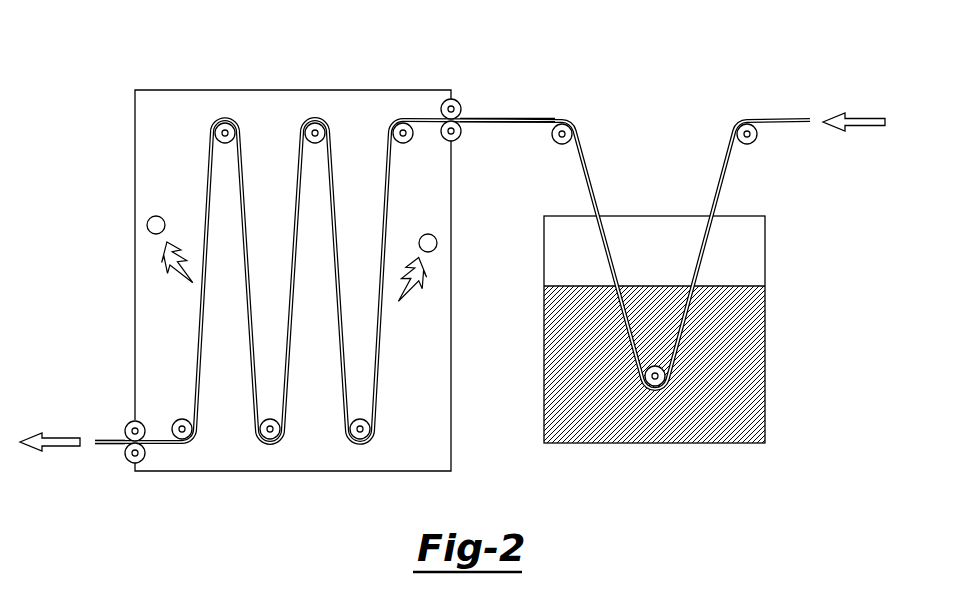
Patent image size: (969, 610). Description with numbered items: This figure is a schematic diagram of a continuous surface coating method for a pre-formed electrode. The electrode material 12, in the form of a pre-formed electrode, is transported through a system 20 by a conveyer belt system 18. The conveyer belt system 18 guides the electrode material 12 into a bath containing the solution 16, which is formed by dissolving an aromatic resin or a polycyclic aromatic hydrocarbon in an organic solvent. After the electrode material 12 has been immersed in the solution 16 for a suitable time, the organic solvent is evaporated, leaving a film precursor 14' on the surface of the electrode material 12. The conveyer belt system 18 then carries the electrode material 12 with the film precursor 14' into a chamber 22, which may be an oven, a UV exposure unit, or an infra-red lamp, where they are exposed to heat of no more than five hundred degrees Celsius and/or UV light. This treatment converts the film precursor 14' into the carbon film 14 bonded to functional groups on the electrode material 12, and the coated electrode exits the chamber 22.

The electrode material 12 is at (784, 117).
The carbon film 14 is at (110, 474).
The film precursor 14' is at (507, 90).
The solution 16 is at (770, 384).
The conveyer belt system 18 is at (463, 142).
The system 20 is at (713, 329).
The chamber 22 is at (296, 89).